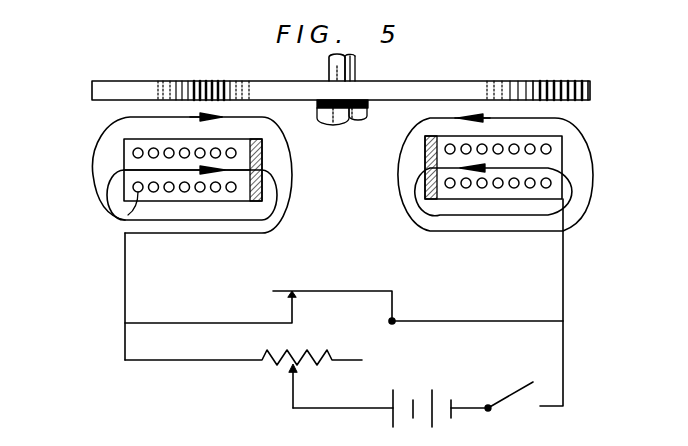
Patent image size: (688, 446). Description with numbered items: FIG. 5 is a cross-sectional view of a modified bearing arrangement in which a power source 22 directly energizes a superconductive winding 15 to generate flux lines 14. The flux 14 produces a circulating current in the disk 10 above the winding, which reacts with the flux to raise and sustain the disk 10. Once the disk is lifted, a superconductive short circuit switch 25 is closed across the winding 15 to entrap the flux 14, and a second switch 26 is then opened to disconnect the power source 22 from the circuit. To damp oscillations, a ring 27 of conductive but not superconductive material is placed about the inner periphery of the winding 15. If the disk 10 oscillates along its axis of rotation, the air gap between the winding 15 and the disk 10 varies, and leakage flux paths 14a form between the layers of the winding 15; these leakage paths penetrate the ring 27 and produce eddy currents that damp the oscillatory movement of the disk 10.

The disk 10 is at (590, 88).
The flux lines 14 is at (90, 153).
The leakage flux paths 14a is at (100, 192).
The superconductive winding 15 is at (137, 194).
The ring 27 is at (262, 165).
The superconductive short circuit switch 25 is at (346, 291).
The power source 22 is at (440, 386).
The second switch 26 is at (534, 352).